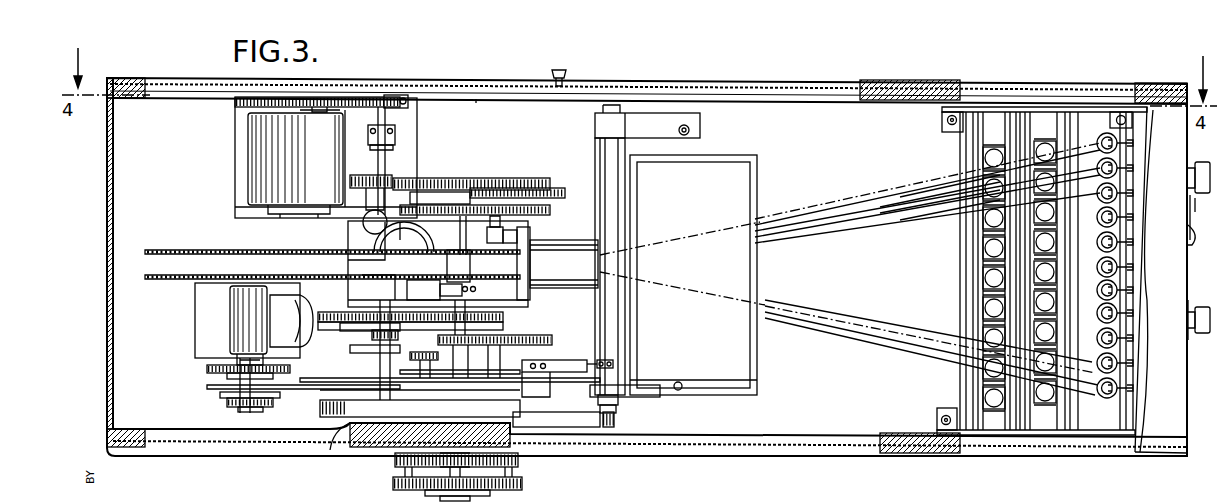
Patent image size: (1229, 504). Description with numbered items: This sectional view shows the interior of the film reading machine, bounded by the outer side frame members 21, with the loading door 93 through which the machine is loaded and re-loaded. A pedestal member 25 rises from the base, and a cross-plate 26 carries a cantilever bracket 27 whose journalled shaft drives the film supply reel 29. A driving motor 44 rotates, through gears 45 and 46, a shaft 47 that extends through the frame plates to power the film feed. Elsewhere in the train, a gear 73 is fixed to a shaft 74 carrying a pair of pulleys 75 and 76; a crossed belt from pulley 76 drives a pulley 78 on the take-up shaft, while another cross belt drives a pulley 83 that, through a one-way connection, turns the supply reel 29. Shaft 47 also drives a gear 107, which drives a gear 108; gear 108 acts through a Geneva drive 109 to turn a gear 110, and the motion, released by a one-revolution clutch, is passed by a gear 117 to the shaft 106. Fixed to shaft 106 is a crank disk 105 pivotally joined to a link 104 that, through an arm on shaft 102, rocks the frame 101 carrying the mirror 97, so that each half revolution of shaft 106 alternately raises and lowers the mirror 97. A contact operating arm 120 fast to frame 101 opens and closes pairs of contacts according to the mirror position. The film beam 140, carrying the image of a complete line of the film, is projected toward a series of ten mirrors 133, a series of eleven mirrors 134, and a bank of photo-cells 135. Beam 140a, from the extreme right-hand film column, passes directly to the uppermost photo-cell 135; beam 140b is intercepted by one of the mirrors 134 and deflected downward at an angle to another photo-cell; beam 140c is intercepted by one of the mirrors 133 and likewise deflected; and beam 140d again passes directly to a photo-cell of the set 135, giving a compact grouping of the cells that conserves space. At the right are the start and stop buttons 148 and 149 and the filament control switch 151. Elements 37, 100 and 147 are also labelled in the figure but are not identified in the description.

The outer side frame member 21 is at (600, 90).
The pedestal member 25 is at (205, 337).
The cross-plate 26 is at (327, 448).
The cantilever bracket 27 is at (282, 345).
The film supply reel 29 is at (172, 279).
The carriage 37 is at (458, 262).
The driving motor 44 is at (275, 152).
The gear 45 is at (345, 97).
The gear 46 is at (405, 99).
The shaft 47 is at (385, 163).
The gear 73 is at (546, 338).
The shaft 74 is at (485, 358).
The pulley 75 is at (512, 390).
The pulley 76 is at (515, 413).
The pulley 78 is at (232, 405).
The pulley 83 is at (227, 385).
The door 93 is at (476, 100).
The mirror 97 is at (728, 333).
The lamp housing 100 is at (566, 252).
The frame 101 is at (706, 386).
The shaft 102 is at (620, 414).
The link 104 is at (553, 418).
The crank disk 105 is at (322, 412).
The shaft 106 is at (378, 364).
The gear 107 is at (366, 204).
The gear 108 is at (455, 180).
The Geneva drive 109 is at (562, 188).
The gear 110 is at (551, 212).
The gear 117 is at (322, 312).
The contact operating arm 120 is at (593, 362).
The series of ten mirrors 133 is at (1004, 118).
The series of eleven mirrors 134 is at (1048, 140).
The photo-cells 135 is at (1106, 132).
The film beam 140 is at (803, 238).
The individual beam 140a is at (891, 190).
The beam 140b is at (933, 185).
The beam 140c is at (915, 205).
The beam 140d is at (947, 208).
The switch 147 is at (1200, 333).
The start button 148 is at (1196, 238).
The stop button 149 is at (1200, 162).
The filament control switch 151 is at (1204, 217).